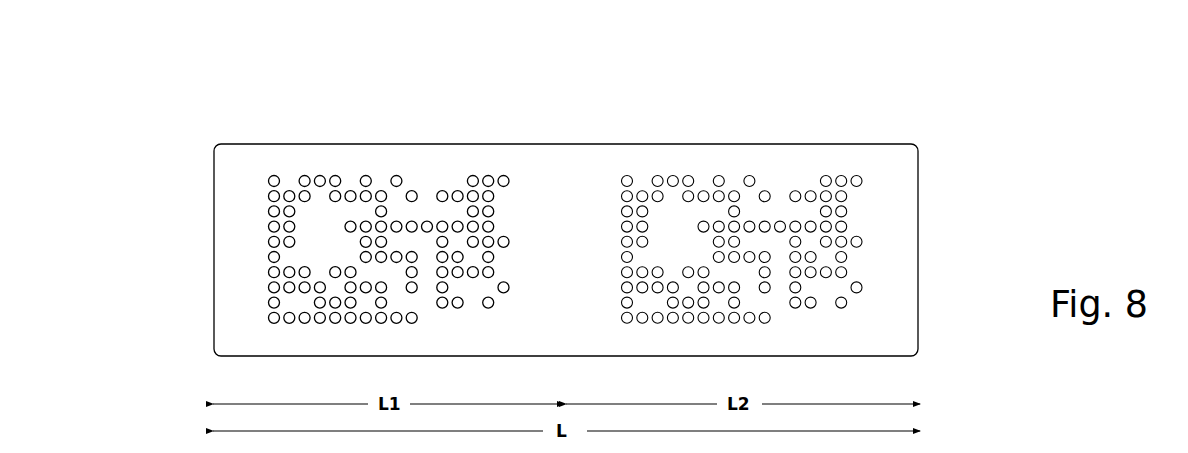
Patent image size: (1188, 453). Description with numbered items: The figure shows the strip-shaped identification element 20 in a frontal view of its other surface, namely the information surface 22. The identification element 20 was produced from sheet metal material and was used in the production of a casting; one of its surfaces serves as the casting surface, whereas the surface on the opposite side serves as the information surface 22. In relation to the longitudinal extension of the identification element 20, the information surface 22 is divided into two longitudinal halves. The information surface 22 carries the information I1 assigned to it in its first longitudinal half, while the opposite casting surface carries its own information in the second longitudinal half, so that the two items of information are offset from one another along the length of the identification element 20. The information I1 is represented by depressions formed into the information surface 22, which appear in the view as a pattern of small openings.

The identification element 20 is at (221, 133).
The information I1 is at (397, 208).
The information surface 22 is at (591, 185).